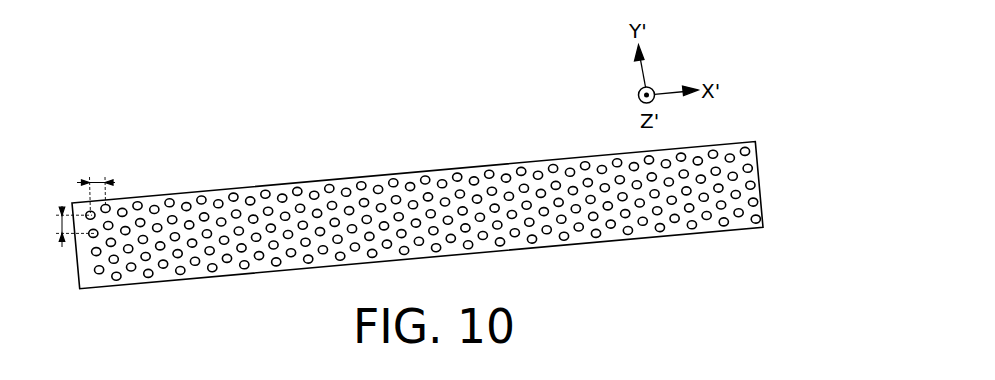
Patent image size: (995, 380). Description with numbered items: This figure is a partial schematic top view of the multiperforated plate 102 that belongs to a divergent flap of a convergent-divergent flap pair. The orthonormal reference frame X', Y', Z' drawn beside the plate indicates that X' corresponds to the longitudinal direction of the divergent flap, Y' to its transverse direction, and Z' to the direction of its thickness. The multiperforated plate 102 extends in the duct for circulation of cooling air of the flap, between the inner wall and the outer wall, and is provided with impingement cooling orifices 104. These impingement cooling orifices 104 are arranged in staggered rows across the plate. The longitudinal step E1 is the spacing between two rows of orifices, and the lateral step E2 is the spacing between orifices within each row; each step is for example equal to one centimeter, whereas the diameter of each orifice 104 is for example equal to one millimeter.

The multiperforated plate 102 is at (244, 183).
The impingement cooling orifices 104 is at (328, 184).
The longitudinal step E1 is at (59, 246).
The lateral step E2 is at (91, 181).